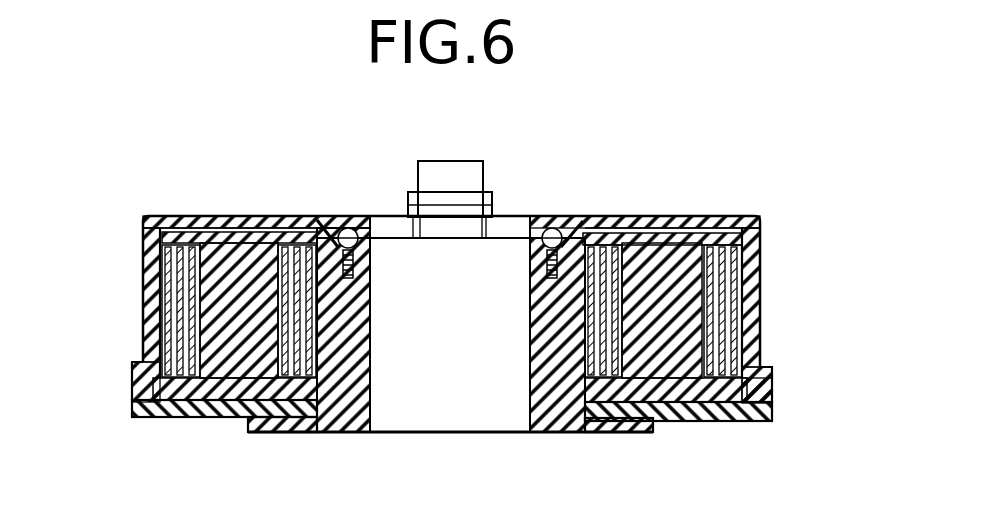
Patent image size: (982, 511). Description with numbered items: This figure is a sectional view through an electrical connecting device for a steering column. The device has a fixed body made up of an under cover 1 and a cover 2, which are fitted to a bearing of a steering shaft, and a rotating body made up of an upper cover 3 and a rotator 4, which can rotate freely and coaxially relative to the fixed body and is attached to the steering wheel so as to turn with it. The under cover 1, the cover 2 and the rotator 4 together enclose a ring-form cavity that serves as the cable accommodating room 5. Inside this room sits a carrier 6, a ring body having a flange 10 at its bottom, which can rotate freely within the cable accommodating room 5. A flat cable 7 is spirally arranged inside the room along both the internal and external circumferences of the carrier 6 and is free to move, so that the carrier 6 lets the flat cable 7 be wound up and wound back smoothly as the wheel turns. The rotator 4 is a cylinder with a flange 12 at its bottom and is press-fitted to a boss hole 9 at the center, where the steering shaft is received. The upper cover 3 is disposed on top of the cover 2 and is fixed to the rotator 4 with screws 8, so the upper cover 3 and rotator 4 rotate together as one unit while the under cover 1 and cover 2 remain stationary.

The under cover 1 is at (673, 422).
The cover 2 is at (757, 273).
The upper cover 3 is at (655, 220).
The rotator 4 is at (562, 433).
The cable accommodating room 5 is at (147, 277).
The carrier 6 is at (208, 418).
The flat cable 7 is at (180, 330).
The screws 8 is at (343, 228).
The boss hole 9 is at (375, 407).
The flange 10 is at (715, 421).
The flange 12 is at (298, 417).